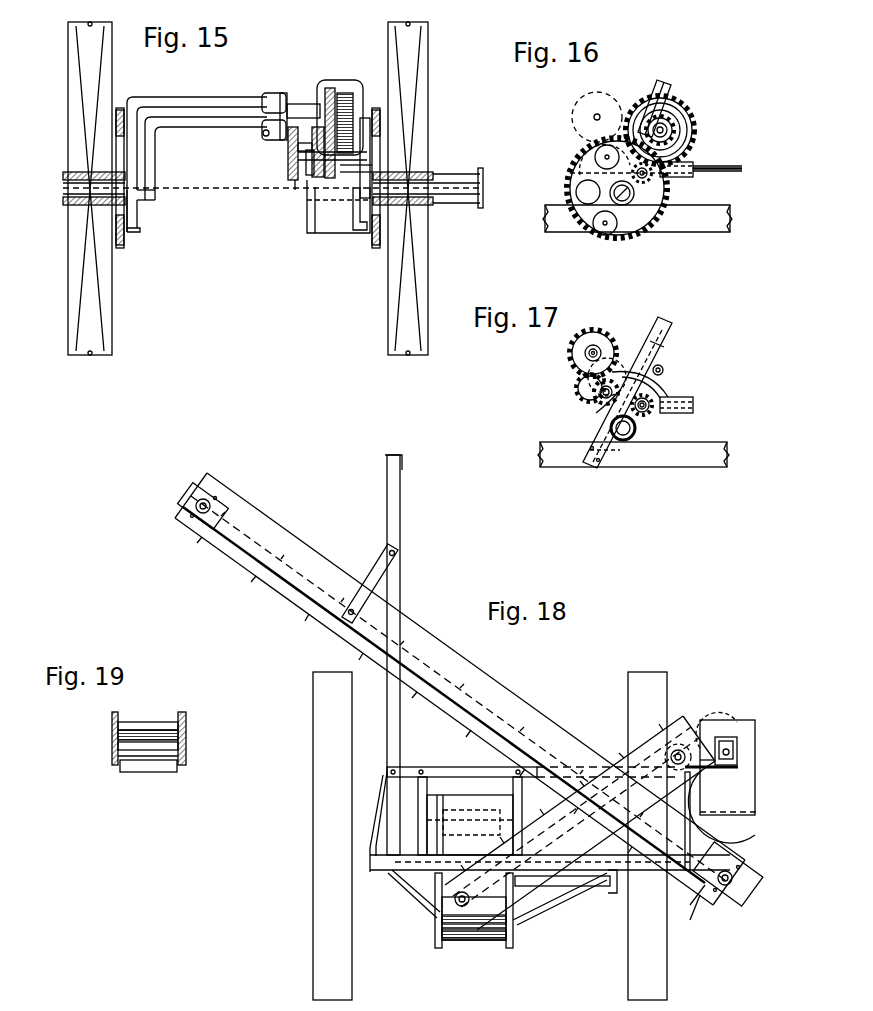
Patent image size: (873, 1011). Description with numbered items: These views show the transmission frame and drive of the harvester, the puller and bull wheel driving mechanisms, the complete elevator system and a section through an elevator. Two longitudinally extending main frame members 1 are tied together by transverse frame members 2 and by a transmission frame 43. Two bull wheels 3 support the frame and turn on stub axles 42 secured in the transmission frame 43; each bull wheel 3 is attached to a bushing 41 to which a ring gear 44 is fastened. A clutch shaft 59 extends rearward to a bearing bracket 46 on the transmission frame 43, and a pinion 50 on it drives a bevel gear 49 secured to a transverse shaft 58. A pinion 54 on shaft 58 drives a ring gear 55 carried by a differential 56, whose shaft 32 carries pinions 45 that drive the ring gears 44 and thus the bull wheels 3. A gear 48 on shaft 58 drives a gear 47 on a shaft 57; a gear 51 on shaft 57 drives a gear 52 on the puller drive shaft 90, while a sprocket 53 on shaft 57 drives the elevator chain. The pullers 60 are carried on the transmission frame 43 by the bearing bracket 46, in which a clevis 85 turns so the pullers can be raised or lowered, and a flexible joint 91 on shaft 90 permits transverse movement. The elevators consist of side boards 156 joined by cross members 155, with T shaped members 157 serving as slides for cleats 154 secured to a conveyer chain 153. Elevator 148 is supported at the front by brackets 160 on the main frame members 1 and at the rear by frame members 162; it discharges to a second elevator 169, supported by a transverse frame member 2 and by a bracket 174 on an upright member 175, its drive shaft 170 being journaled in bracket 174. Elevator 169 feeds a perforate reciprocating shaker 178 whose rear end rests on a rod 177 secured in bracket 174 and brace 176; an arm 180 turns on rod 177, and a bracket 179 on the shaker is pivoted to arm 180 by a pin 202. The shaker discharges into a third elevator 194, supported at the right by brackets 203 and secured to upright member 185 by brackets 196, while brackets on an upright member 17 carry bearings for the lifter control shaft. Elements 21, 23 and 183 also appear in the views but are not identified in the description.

In FIG. 15, the main frame members 1 is at (137, 228).
In FIG. 16, the main frame members 1 is at (663, 236).
In FIG. 17, the main frame members 1 is at (560, 462).
In FIG. 18, the main frame members 1 is at (370, 852).
In FIG. 18, the transverse frame members 2 is at (573, 875).
In FIG. 15, the bull wheels 3 is at (72, 265).
In FIG. 18, the bull wheels 3 is at (323, 877).
In FIG. 18, the upright member 17 is at (383, 800).
In FIG. 18, the cross bar 21 is at (405, 767).
In FIG. 18, the bracket 23 is at (612, 890).
In FIG. 16, the shaft 32 is at (690, 112).
In FIG. 15, the bushings 41 is at (80, 186).
In FIG. 15, the stub axles 42 is at (85, 189).
In FIG. 16, the stub axles 42 is at (616, 198).
In FIG. 17, the stub axles 42 is at (623, 432).
In FIG. 15, the transmission frame 43 is at (138, 143).
In FIG. 16, the transmission frame 43 is at (663, 86).
In FIG. 17, the transmission frame 43 is at (597, 458).
In FIG. 15, the ring gears 44 is at (118, 145).
In FIG. 16, the ring gears 44 is at (620, 238).
In FIG. 15, the pinions 45 is at (118, 112).
In FIG. 16, the pinions 45 is at (670, 130).
In FIG. 15, the bearing bracket 46 is at (265, 136).
In FIG. 17, the bearing bracket 46 is at (666, 395).
In FIG. 15, the gear 47 is at (290, 150).
In FIG. 17, the gear 47 is at (590, 380).
In FIG. 15, the gear 48 is at (293, 178).
In FIG. 17, the gear 48 is at (648, 408).
In FIG. 15, the bevel gear 49 is at (296, 183).
In FIG. 16, the bevel gear 49 is at (650, 176).
In FIG. 15, the pinion 50 is at (302, 200).
In FIG. 16, the pinion 50 is at (672, 173).
In FIG. 15, the gear 51 is at (320, 175).
In FIG. 17, the gear 51 is at (592, 400).
In FIG. 15, the gear 52 is at (318, 95).
In FIG. 17, the gear 52 is at (585, 345).
In FIG. 15, the sprocket 53 is at (315, 165).
In FIG. 17, the sprocket 53 is at (580, 392).
In FIG. 15, the pinion 54 is at (338, 165).
In FIG. 16, the pinion 54 is at (650, 185).
In FIG. 15, the ring gear 55 is at (345, 115).
In FIG. 16, the ring gear 55 is at (675, 105).
In FIG. 15, the differential 56 is at (350, 85).
In FIG. 16, the differential 56 is at (690, 143).
In FIG. 15, the shaft 57 is at (370, 150).
In FIG. 16, the shaft 57 is at (598, 152).
In FIG. 17, the shaft 57 is at (595, 413).
In FIG. 15, the transverse shaft 58 is at (368, 166).
In FIG. 16, the transverse shaft 58 is at (592, 181).
In FIG. 17, the transverse shaft 58 is at (645, 412).
In FIG. 16, the clutch shaft 59 is at (741, 166).
In FIG. 17, the pullers 60 is at (662, 368).
In FIG. 15, the clevis 85 is at (283, 100).
In FIG. 16, the puller drive shaft 90 is at (594, 116).
In FIG. 17, the puller drive shaft 90 is at (590, 354).
In FIG. 15, the flexible joint 91 is at (270, 118).
In FIG. 18, the elevator 148 is at (508, 945).
In FIG. 19, the conveyer chain 153 is at (118, 745).
In FIG. 18, the conveyer chain 153 is at (498, 935).
In FIG. 19, the cleats 154 is at (155, 722).
In FIG. 18, the cleats 154 is at (462, 941).
In FIG. 19, the cross members 155 is at (113, 760).
In FIG. 19, the side boards 156 is at (115, 730).
In FIG. 19, the T shaped members 157 is at (183, 740).
In FIG. 18, the brackets 160 is at (415, 888).
In FIG. 18, the frame members 162 is at (515, 790).
In FIG. 18, the second elevator 169 is at (563, 840).
In FIG. 18, the elevator drive shaft 170 is at (680, 750).
In FIG. 18, the bracket 174 is at (700, 765).
In FIG. 18, the upright member 175 is at (705, 888).
In FIG. 18, the brace 176 is at (698, 905).
In FIG. 18, the rod 177 is at (712, 762).
In FIG. 18, the shaker 178 is at (752, 733).
In FIG. 18, the bracket 179 is at (736, 746).
In FIG. 18, the arm 180 is at (745, 772).
In FIG. 18, the head pulley 183 is at (195, 504).
In FIG. 18, the upright member 185 is at (398, 520).
In FIG. 18, the third elevator 194 is at (500, 705).
In FIG. 18, the brackets 196 is at (375, 572).
In FIG. 18, the pin 202 is at (740, 713).
In FIG. 18, the brackets 203 is at (728, 886).